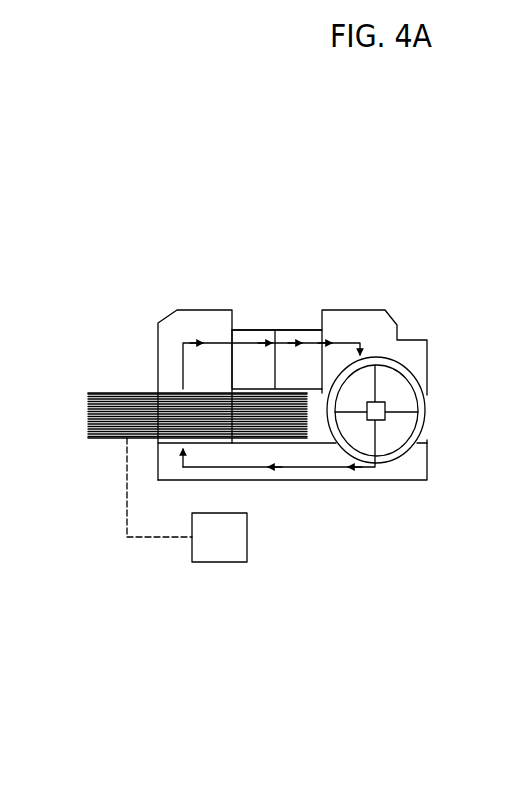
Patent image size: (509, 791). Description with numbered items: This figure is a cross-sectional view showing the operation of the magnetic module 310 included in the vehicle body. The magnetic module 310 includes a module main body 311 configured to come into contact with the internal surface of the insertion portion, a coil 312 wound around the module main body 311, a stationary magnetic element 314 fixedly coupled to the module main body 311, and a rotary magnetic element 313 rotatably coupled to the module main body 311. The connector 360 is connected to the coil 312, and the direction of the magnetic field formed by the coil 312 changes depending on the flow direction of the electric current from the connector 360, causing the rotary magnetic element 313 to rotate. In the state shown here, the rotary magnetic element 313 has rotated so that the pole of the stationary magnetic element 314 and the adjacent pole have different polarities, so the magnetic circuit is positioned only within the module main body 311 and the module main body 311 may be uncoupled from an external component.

The magnetic module 310 is at (372, 298).
The module main body 311 is at (200, 323).
The coil 312 is at (105, 393).
The rotary magnetic element 313 is at (394, 392).
The stationary magnetic element 314 is at (284, 330).
The connector 360 is at (247, 537).